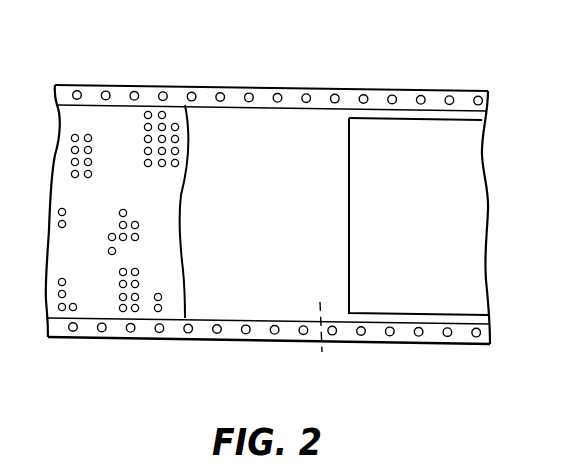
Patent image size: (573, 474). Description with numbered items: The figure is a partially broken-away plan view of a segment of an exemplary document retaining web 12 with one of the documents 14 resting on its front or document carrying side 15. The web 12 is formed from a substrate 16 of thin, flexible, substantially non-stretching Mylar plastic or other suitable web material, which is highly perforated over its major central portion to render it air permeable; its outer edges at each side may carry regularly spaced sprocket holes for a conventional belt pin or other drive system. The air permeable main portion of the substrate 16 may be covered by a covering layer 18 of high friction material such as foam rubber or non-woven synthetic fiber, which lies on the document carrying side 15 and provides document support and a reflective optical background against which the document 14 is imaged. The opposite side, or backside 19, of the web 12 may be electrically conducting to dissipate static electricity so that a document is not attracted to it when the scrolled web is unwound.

The web 12 is at (300, 71).
The document 14 is at (473, 203).
The document carrying side 15 is at (290, 310).
The substrate 16 is at (97, 297).
The covering layer 18 is at (208, 305).
The backside 19 is at (326, 341).